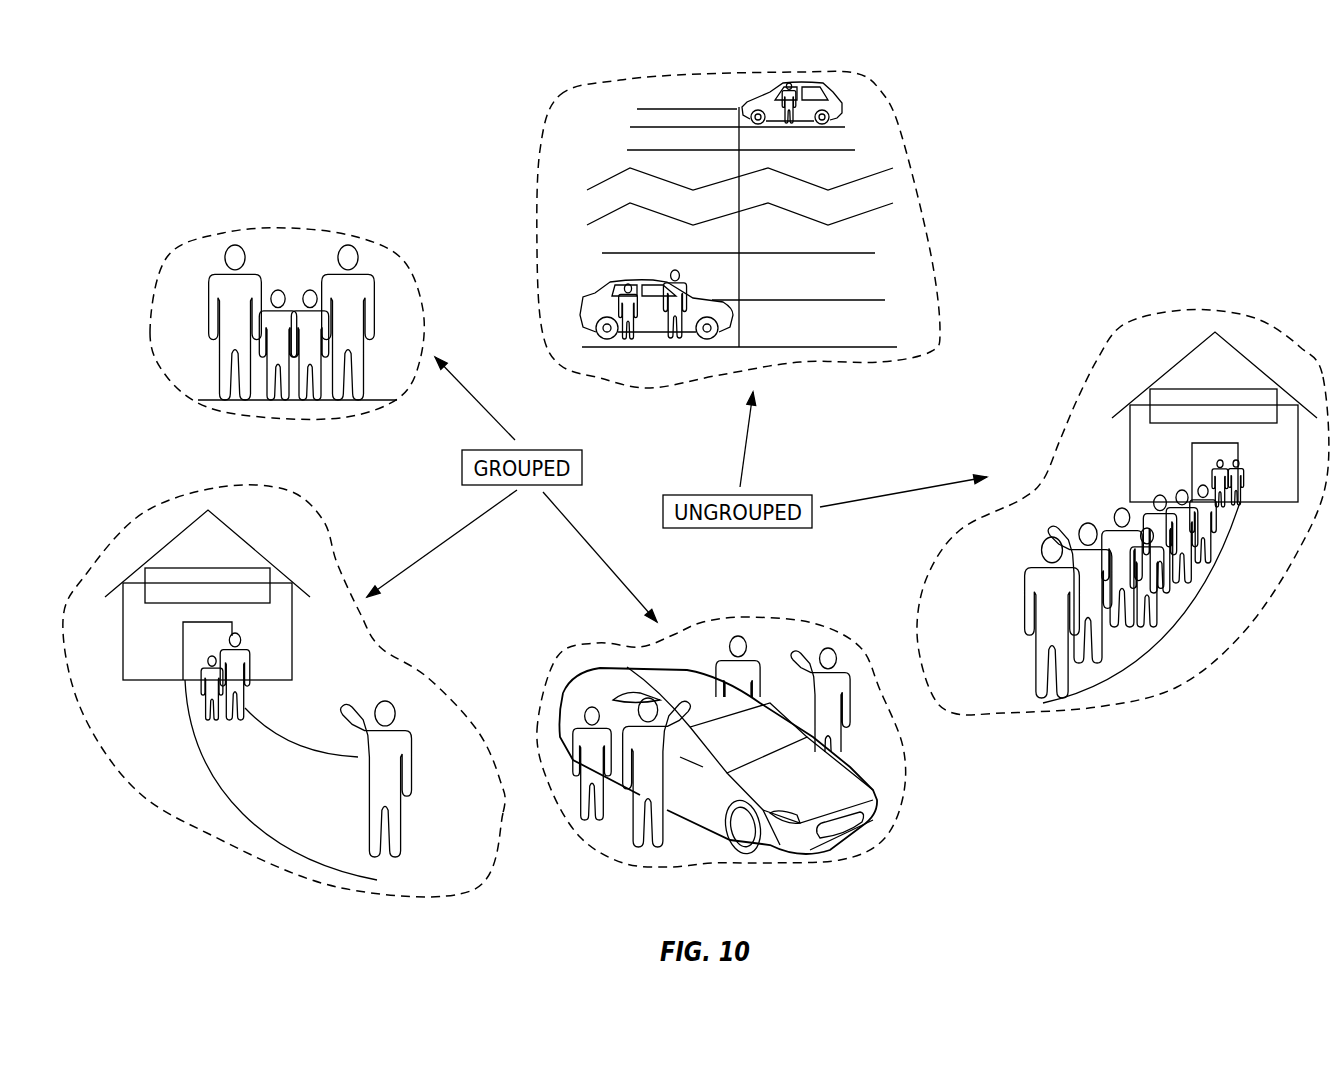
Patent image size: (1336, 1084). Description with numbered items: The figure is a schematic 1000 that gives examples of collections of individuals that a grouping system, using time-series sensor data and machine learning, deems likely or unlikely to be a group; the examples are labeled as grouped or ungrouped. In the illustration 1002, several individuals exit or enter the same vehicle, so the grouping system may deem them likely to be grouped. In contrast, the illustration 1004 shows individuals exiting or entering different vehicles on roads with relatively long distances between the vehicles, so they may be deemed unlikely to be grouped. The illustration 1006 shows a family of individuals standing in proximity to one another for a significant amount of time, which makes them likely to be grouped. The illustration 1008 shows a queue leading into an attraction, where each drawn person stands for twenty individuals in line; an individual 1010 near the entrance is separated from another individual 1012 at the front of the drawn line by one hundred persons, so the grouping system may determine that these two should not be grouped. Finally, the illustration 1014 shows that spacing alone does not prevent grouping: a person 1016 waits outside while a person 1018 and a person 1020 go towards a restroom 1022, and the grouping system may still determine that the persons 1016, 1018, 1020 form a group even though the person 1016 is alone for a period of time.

The schematic 1000 is at (1232, 73).
The illustration 1002 is at (747, 618).
The illustration 1004 is at (905, 180).
The illustration 1006 is at (288, 229).
The illustration 1008 is at (1053, 450).
The individual 1010 is at (1217, 528).
The individual 1012 is at (1036, 567).
The illustration 1014 is at (366, 622).
The person 1016 is at (382, 698).
The person 1018 is at (250, 667).
The person 1020 is at (203, 682).
The restroom 1022 is at (253, 547).